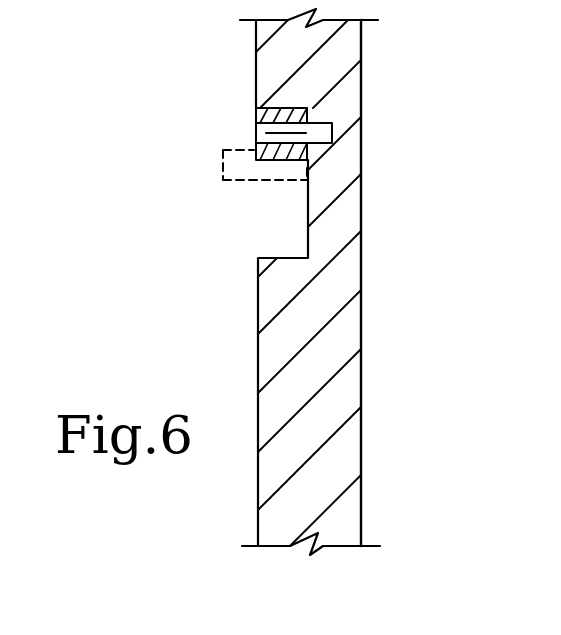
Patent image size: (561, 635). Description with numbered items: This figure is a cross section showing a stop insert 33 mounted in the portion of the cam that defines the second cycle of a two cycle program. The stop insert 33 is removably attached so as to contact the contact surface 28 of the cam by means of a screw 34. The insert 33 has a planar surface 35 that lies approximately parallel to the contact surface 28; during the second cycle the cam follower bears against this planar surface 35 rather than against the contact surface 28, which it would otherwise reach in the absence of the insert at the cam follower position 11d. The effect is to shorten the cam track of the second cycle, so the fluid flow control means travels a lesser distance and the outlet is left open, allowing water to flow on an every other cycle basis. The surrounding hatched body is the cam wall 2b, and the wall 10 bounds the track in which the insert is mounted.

The contact surface 28 is at (290, 107).
The housing wall 10 is at (363, 43).
The body 2b is at (258, 310).
The stop insert 33 is at (256, 115).
The screw 34 is at (262, 133).
The planar surface 35 is at (272, 161).
The cam follower position 11d is at (222, 182).